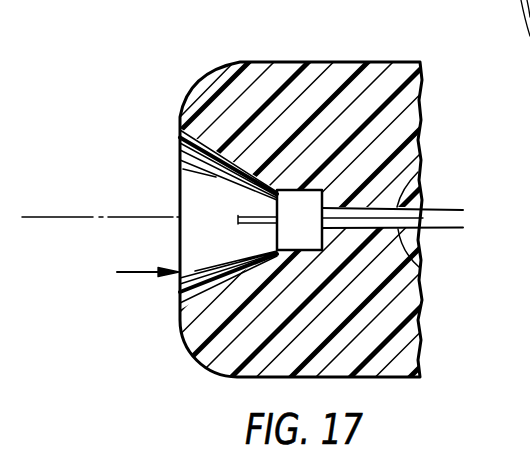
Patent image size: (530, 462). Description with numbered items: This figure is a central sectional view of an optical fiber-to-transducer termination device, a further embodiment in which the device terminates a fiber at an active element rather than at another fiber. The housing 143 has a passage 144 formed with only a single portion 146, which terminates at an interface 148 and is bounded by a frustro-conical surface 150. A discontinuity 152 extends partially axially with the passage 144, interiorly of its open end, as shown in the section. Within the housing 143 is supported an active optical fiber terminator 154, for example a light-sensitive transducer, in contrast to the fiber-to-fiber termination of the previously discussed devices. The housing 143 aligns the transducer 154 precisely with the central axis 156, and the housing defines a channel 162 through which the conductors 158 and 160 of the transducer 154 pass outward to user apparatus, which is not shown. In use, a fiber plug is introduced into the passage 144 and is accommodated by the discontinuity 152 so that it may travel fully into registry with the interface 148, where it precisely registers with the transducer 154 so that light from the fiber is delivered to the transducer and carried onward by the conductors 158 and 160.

The housing 143 is at (302, 64).
The passage 144 is at (123, 274).
The single portion 146 is at (224, 257).
The interface 148 is at (277, 208).
The frustro-conical surface 150 is at (191, 153).
The discontinuity 152 is at (236, 219).
The active optical fiber terminator 154 is at (318, 235).
The central axis 156 is at (87, 216).
The conductor 158 is at (462, 210).
The conductor 160 is at (462, 228).
The channel 162 is at (418, 172).